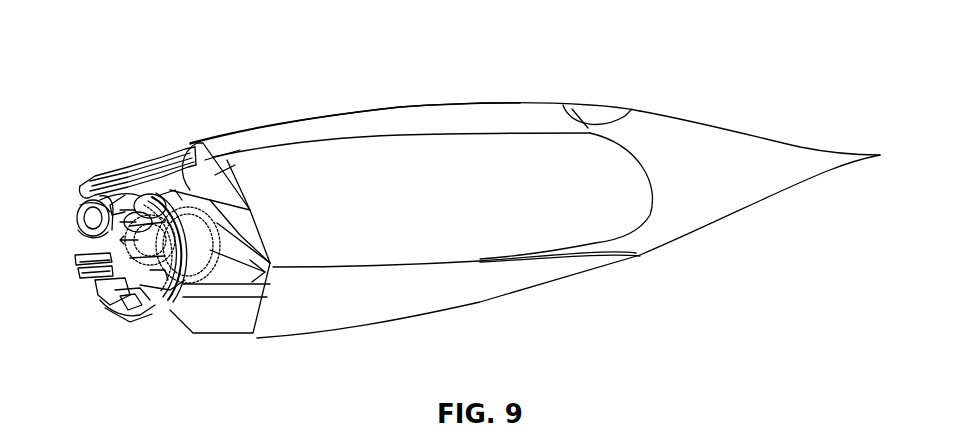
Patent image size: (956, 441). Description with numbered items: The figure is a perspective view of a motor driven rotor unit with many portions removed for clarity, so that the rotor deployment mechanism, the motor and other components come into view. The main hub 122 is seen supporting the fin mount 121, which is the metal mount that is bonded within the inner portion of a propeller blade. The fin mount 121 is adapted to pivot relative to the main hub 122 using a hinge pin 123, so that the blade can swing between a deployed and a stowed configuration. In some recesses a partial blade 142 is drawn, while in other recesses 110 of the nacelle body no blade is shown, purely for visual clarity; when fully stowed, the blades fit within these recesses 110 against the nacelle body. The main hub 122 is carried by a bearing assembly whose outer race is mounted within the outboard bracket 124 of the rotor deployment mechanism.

The recess 110 is at (648, 162).
The partial blade 142 is at (213, 136).
The fin mount 121 is at (139, 158).
The hinge pin 123 is at (143, 211).
The main hub 122 is at (110, 278).
The outboard bracket 124 is at (193, 255).